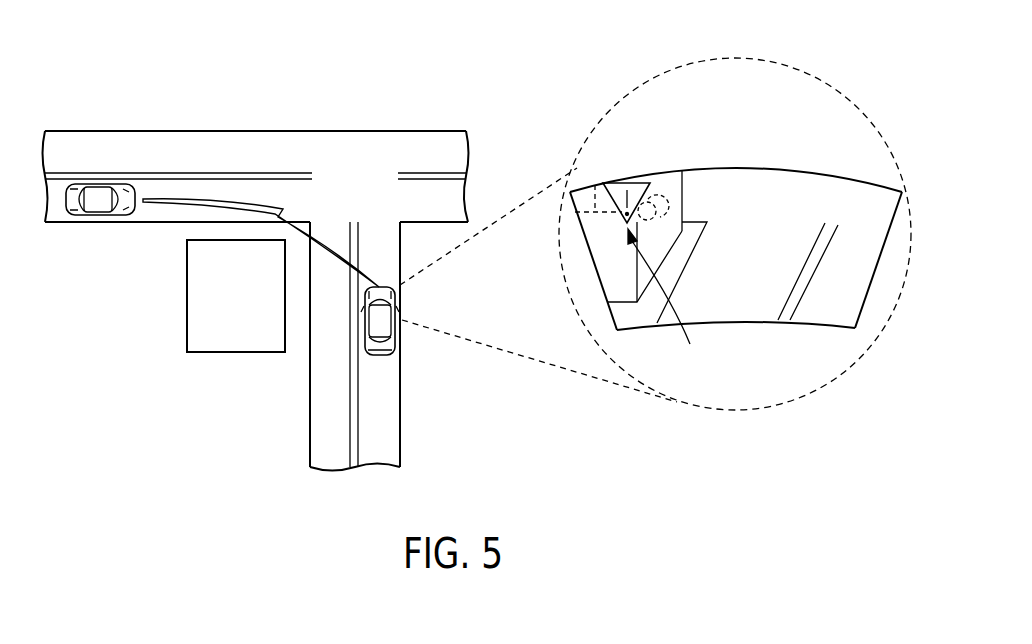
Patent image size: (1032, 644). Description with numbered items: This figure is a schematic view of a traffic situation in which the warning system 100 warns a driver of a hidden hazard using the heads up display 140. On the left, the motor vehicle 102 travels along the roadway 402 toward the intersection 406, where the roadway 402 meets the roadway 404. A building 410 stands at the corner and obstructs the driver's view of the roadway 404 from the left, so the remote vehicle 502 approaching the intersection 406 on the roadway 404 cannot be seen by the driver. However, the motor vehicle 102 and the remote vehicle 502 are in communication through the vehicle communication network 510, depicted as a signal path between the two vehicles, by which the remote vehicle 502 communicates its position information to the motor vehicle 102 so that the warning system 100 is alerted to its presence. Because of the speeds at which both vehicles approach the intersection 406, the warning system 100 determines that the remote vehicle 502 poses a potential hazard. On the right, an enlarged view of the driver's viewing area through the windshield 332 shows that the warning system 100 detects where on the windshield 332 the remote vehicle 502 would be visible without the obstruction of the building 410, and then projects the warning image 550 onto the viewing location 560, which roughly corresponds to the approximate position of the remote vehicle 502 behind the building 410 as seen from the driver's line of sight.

The warning system 100 is at (752, 82).
The motor vehicle 102 is at (392, 340).
The heads up display device 140 is at (747, 330).
The windshield 332 is at (769, 181).
The roadway 402 is at (392, 444).
The roadway 404 is at (208, 142).
The intersection 406 is at (365, 172).
The building 410 is at (240, 337).
The remote vehicle 502 is at (93, 203).
The vehicle communication network 510 is at (262, 206).
The warning image 550 is at (616, 184).
The viewing location 560 is at (670, 300).